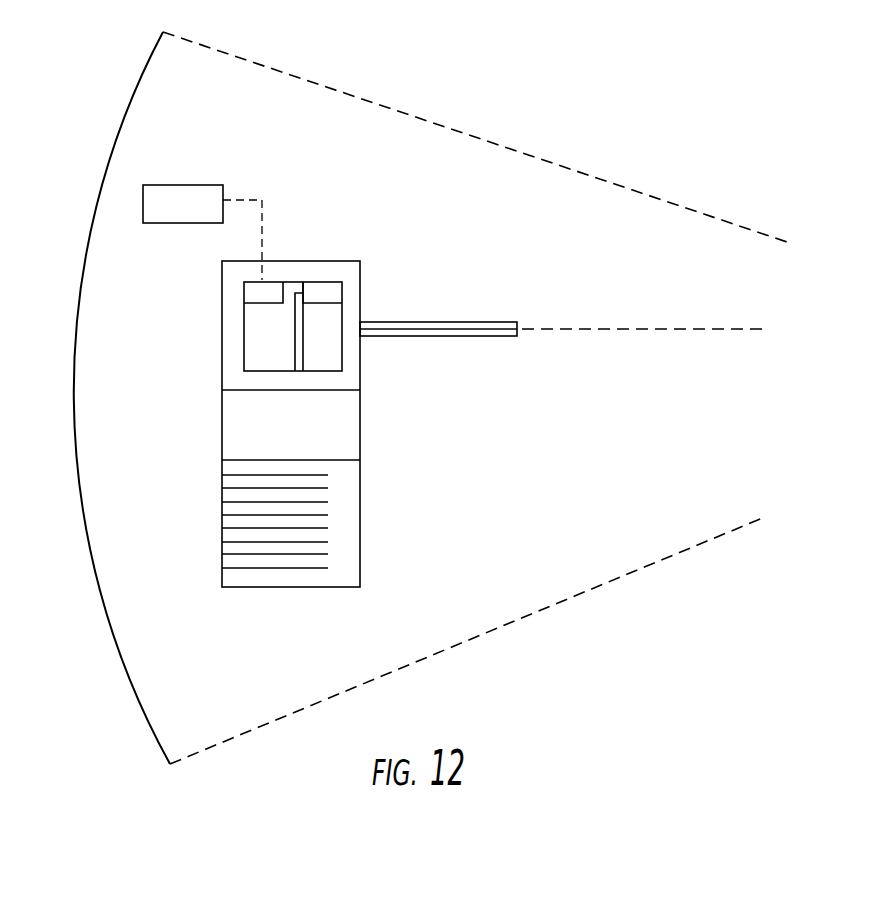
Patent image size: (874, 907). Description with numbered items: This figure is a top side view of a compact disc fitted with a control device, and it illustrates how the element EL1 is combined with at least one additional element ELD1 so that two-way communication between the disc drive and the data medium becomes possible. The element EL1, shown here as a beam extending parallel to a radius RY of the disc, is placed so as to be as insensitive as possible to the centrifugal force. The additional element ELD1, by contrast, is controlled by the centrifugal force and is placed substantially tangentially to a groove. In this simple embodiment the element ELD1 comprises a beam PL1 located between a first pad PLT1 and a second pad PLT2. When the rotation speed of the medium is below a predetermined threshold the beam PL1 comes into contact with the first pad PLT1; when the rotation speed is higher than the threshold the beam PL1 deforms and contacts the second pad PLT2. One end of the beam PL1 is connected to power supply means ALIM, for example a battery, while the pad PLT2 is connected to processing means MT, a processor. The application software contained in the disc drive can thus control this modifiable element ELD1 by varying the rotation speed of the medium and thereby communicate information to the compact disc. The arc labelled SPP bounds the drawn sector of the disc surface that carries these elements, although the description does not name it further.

The spherical surface of the sector SPP is at (99, 176).
The radius RY is at (652, 328).
The processing means MT is at (202, 232).
The power supply means ALIM is at (352, 530).
The additional element ELD1 is at (283, 335).
The second pad PLT2 is at (270, 287).
The first pad PLT1 is at (325, 290).
The beam PL1 is at (305, 333).
The element EL1 is at (460, 340).